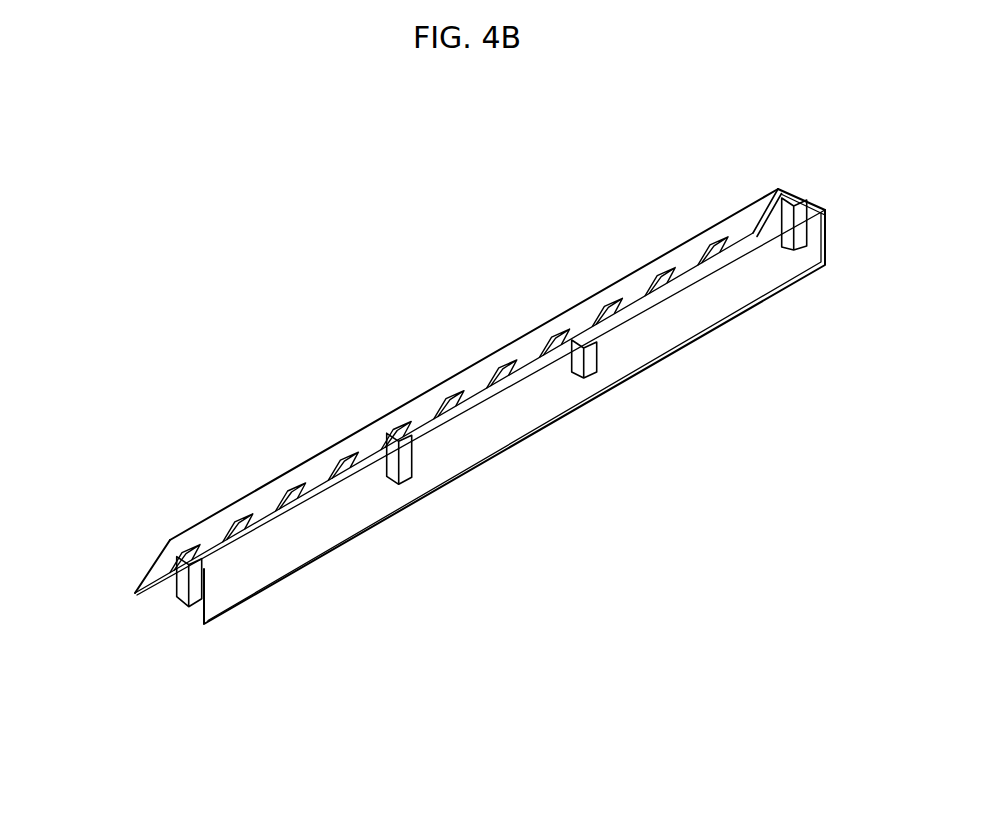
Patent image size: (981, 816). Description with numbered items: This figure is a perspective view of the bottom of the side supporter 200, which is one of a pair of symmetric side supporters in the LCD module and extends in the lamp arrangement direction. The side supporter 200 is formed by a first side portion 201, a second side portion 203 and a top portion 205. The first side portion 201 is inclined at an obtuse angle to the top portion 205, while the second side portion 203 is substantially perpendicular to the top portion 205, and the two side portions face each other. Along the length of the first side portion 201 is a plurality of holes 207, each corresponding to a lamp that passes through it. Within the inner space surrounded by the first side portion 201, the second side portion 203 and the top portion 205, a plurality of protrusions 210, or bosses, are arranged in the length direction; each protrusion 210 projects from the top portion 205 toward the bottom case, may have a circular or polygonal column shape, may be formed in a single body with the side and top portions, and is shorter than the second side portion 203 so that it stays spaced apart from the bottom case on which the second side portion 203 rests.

The side supporter 200 is at (468, 378).
The first side portion 201 is at (153, 566).
The second side portion 203 is at (212, 627).
The top portion 205 is at (803, 196).
The holes 207 is at (661, 293).
The protrusions 210 is at (179, 604).